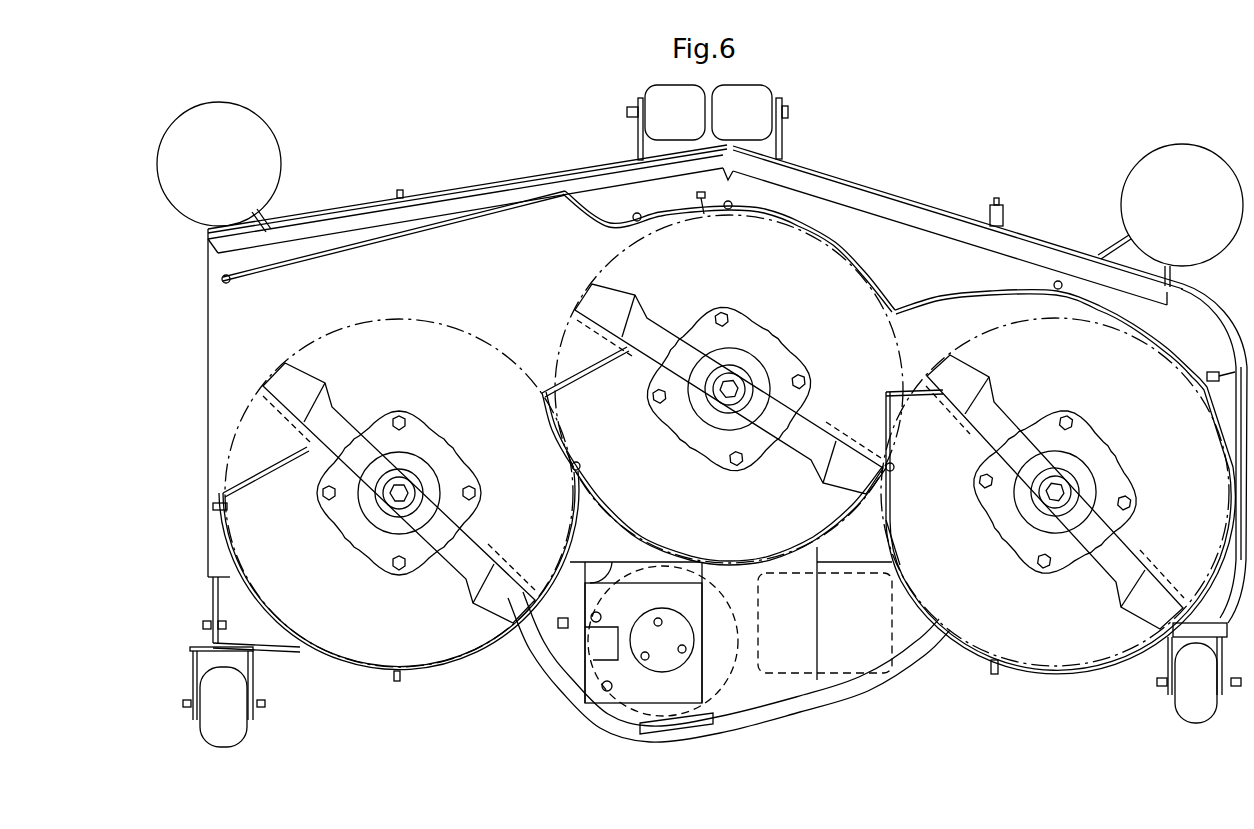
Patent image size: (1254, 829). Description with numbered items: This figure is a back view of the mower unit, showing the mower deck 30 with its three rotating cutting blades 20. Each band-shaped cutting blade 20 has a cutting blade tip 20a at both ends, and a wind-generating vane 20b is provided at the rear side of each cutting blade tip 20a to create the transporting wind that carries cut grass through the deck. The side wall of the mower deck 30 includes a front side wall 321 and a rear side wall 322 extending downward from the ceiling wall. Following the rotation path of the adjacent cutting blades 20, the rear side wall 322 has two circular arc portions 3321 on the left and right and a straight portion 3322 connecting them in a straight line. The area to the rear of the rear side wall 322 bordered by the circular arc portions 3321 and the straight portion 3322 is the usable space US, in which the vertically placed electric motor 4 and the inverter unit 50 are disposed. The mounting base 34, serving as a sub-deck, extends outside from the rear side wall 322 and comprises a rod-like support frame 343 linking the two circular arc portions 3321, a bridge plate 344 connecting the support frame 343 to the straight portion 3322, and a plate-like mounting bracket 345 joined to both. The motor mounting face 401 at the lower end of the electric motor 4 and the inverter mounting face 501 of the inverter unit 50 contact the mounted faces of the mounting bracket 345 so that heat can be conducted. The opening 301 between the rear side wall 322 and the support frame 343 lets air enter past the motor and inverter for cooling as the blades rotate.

The mower deck 30 is at (950, 175).
The front side wall 321 is at (857, 200).
The rear side wall 322 is at (1057, 670).
The cutting blade 20 is at (640, 362).
The cutting blade tip 20a is at (265, 422).
The wind-generating vane 20b is at (323, 390).
The circular arc portion 3321 is at (507, 640).
The straight portion 3322 is at (654, 560).
The bridge plate 344 is at (603, 580).
The motor mounting face 401 is at (640, 687).
The electric motor 4 is at (607, 697).
The mounting bracket 345 is at (665, 703).
The inverter mounting face 501 is at (800, 620).
The inverter unit 50 is at (833, 673).
The mounting base 34 is at (888, 687).
The support frame 343 is at (797, 700).
The opening 301 is at (907, 617).
The usable space US is at (570, 637).